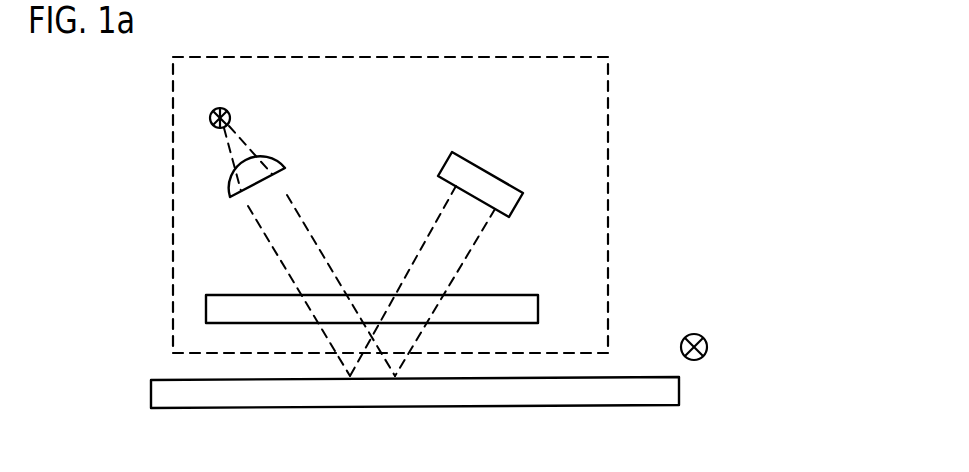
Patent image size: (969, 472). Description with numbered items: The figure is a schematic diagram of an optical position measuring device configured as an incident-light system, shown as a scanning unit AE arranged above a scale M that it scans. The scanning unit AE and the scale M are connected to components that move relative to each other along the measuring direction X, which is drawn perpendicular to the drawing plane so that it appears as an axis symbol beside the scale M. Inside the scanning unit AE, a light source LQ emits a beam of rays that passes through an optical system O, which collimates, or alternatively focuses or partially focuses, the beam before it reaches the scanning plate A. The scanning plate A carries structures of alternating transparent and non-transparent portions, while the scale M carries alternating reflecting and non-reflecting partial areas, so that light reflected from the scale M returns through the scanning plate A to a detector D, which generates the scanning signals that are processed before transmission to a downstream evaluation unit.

The scanning unit (sensor head) enclosure AE is at (608, 101).
The light source LQ is at (229, 112).
The optics / lens O is at (286, 182).
The detector D is at (493, 181).
The scanning plate A is at (502, 300).
The scale M is at (185, 399).
The measuring direction X is at (708, 345).